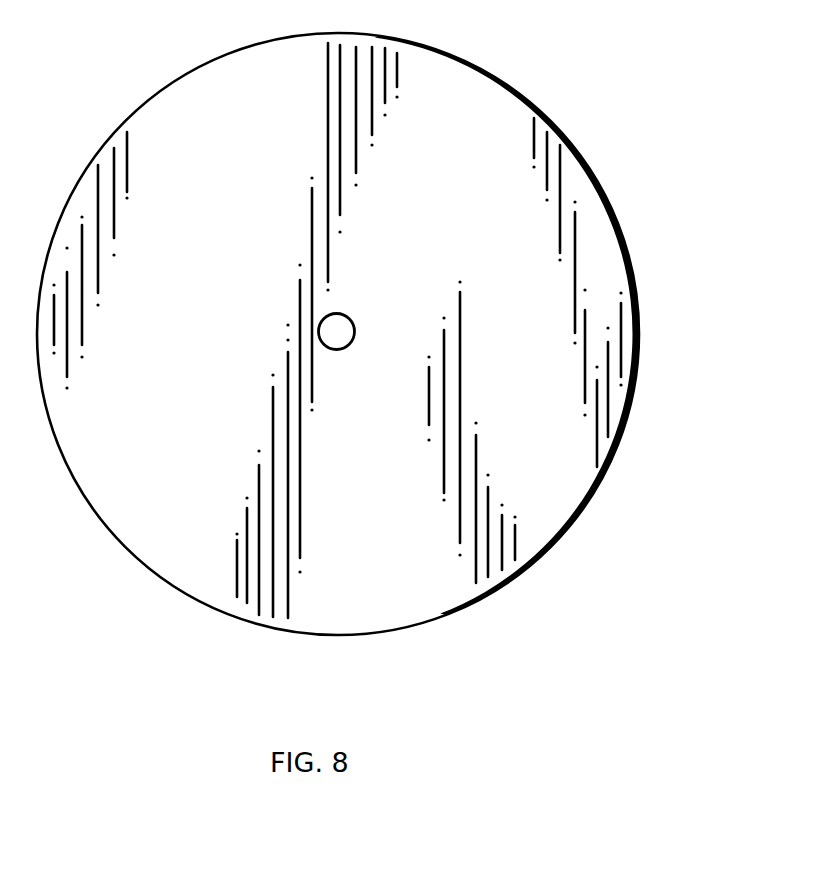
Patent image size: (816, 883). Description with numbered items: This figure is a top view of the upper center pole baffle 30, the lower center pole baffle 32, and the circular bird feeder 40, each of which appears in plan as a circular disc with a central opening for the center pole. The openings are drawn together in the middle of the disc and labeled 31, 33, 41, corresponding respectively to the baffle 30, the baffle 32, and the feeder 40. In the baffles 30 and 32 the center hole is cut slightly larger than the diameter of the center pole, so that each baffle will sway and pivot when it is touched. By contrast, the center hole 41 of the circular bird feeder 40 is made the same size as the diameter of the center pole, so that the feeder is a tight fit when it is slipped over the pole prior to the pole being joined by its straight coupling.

The upper center pole baffle 30 is at (400, 334).
The lower center pole baffle 32 is at (400, 334).
The circular bird feeder 40 is at (622, 437).
The central hole 31 is at (535, 264).
The central hole 33 is at (535, 264).
The central hole 41 is at (342, 320).